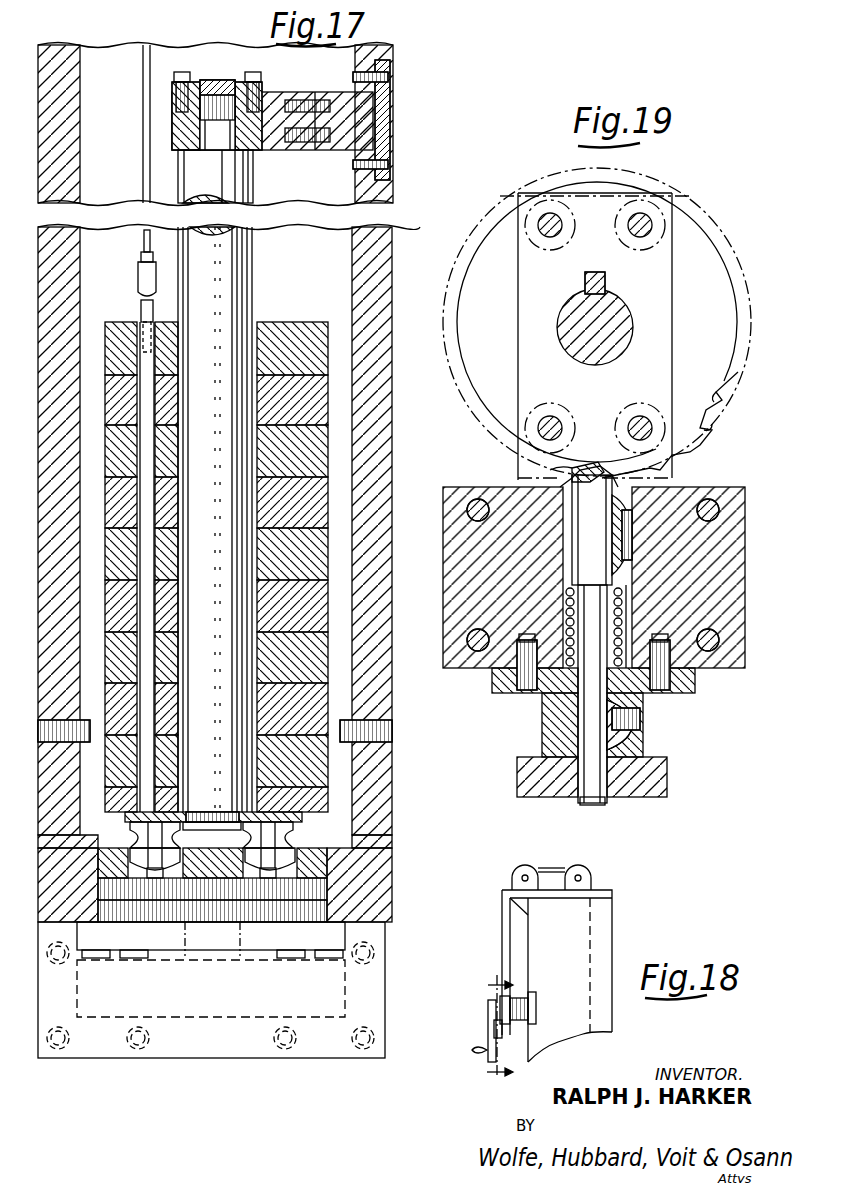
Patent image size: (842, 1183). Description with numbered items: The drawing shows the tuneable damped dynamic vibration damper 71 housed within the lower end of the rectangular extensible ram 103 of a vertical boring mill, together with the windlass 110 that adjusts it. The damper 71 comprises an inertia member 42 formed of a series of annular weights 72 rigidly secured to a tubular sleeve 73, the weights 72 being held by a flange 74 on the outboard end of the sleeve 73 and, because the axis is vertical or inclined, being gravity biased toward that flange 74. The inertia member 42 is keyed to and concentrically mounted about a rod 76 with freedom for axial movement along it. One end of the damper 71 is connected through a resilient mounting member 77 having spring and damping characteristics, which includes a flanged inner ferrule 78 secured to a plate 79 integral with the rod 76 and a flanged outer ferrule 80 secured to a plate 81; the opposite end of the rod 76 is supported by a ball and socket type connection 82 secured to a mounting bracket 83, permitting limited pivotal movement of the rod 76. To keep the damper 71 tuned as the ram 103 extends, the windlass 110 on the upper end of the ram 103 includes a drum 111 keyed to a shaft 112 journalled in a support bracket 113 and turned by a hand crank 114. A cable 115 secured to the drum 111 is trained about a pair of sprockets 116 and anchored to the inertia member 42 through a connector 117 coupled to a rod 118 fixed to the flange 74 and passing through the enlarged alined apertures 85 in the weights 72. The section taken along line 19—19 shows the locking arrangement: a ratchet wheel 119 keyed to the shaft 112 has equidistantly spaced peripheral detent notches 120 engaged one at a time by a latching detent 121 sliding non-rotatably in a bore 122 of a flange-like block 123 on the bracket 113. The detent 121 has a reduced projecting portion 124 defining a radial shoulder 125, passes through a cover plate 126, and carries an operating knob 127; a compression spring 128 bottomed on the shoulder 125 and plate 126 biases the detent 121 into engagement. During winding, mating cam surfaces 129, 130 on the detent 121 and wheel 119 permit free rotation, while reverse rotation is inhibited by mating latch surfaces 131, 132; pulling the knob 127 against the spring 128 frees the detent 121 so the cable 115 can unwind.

In FIG. 17, the tuneable damped dynamic vibration damper 71 is at (134, 190).
In FIG. 17, the cable 115 is at (144, 98).
In FIG. 18, the cable 115 is at (564, 873).
In FIG. 17, the ball and socket type connection 82 is at (219, 108).
In FIG. 17, the mounting bracket 83 is at (270, 96).
In FIG. 17, the ram 103 is at (393, 235).
In FIG. 18, the ram 103 is at (604, 941).
In FIG. 17, the inertia member 42 is at (330, 470).
In FIG. 17, the rod 76 is at (242, 288).
In FIG. 17, the connector 117 is at (138, 277).
In FIG. 17, the rod 118 is at (148, 554).
In FIG. 17, the tubular sleeve 73 is at (177, 348).
In FIG. 17, the enlarged alined apertures 85 is at (155, 418).
In FIG. 17, the weights 72 is at (295, 428).
In FIG. 17, the flange 74 is at (270, 792).
In FIG. 17, the plate 79 is at (225, 810).
In FIG. 17, the resilient mounting member 77 is at (130, 833).
In FIG. 17, the flanged inner ferrule 78 is at (243, 833).
In FIG. 17, the flanged outer ferrule 80 is at (297, 833).
In FIG. 17, the plate 81 is at (305, 876).
In FIG. 19, the ratchet wheel 119 is at (720, 302).
In FIG. 19, the peripheral detent notches 120 is at (723, 390).
In FIG. 19, the cam surface 130 is at (730, 384).
In FIG. 19, the latch surface 132 is at (716, 411).
In FIG. 19, the shaft 112 is at (627, 314).
In FIG. 19, the cam surface 129 is at (608, 473).
In FIG. 19, the flange-like block 123 is at (723, 580).
In FIG. 19, the latch surface 131 is at (570, 494).
In FIG. 19, the latching detent 121 is at (572, 528).
In FIG. 19, the bore 122 is at (628, 519).
In FIG. 19, the compression spring 128 is at (562, 596).
In FIG. 19, the radial shoulder 125 is at (633, 598).
In FIG. 19, the cover plate 126 is at (693, 682).
In FIG. 19, the operating knob 127 is at (657, 773).
In FIG. 19, the projecting portion 124 is at (593, 787).
In FIG. 18, the sprockets 116 is at (576, 866).
In FIG. 18, the support bracket 113 is at (502, 910).
In FIG. 18, the drum 111 is at (528, 1000).
In FIG. 18, the windlass 110 is at (484, 1004).
In FIG. 18, the hand crank 114 is at (488, 1030).
In FIG. 18, the line 19— 19 is at (490, 1032).